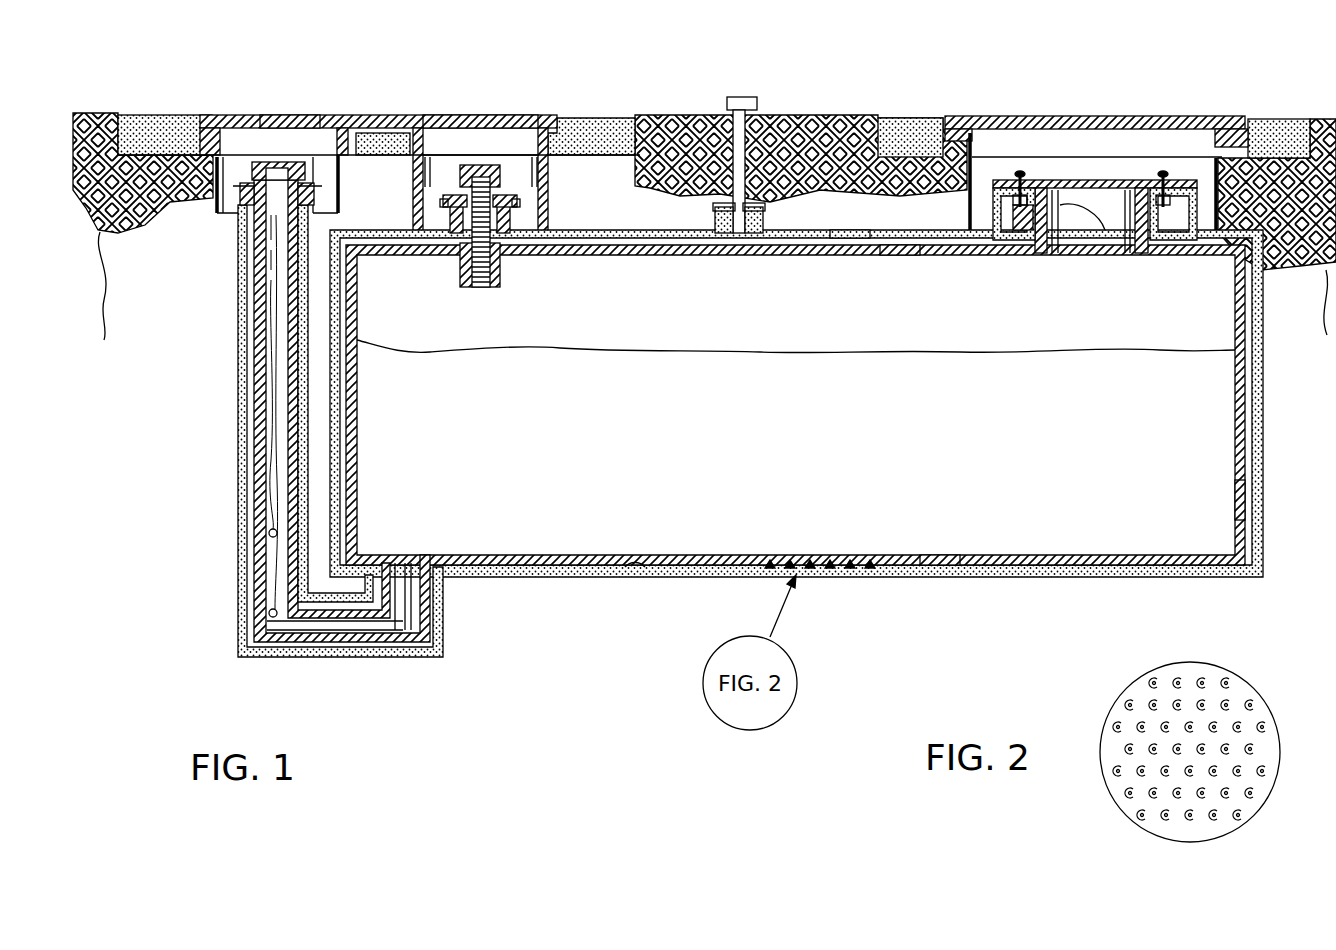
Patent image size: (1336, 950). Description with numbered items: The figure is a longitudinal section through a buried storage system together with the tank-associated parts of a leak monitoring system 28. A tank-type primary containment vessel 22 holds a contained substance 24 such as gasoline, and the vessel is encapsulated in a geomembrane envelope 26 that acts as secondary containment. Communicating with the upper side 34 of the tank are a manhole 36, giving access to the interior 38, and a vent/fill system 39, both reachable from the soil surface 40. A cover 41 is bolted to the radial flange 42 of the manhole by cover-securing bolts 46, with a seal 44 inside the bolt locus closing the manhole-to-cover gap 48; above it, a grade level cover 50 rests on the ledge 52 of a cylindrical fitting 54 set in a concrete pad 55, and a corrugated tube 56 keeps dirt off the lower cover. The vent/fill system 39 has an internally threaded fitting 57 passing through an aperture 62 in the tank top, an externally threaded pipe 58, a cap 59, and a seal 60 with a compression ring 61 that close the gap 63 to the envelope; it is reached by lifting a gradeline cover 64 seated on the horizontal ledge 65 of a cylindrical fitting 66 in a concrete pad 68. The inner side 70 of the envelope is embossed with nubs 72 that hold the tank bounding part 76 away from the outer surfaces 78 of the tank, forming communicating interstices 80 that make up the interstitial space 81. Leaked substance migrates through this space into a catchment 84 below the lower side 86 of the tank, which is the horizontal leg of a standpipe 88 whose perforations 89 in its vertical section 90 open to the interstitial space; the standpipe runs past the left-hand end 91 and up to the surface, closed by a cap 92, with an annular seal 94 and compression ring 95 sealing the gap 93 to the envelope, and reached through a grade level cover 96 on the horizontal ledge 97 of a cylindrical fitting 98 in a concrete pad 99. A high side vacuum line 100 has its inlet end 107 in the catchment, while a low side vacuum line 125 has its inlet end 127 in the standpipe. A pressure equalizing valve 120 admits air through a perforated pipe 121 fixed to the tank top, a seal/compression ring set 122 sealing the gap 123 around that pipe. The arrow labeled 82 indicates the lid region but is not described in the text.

In FIG. 1, the primary containment vessel 22 is at (855, 234).
In FIG. 1, the contained substance 24 is at (814, 340).
In FIG. 1, the envelope 26 is at (1276, 325).
In FIG. 2, the envelope 26 is at (1262, 680).
In FIG. 1, the system 28 is at (252, 563).
In FIG. 1, the upper side 34 is at (905, 242).
In FIG. 1, the manhole 36 is at (1090, 262).
In FIG. 1, the interior 38 is at (897, 338).
In FIG. 1, the vent/fill system 39 is at (566, 82).
In FIG. 1, the surface 40 is at (703, 105).
In FIG. 1, the cover 41 is at (1075, 180).
In FIG. 1, the radial flange 42 is at (1188, 228).
In FIG. 1, the seal 44 is at (1033, 180).
In FIG. 1, the cover-securing bolts 46 is at (1013, 228).
In FIG. 1, the manhole-to-cover gap 48 is at (1118, 193).
In FIG. 1, the grade level cover 50 is at (1192, 108).
In FIG. 1, the ledge 52 is at (1222, 137).
In FIG. 1, the cylindrical fitting 54 is at (950, 128).
In FIG. 1, the concrete pad 55 is at (932, 72).
In FIG. 1, the corrugated tube 56 is at (968, 195).
In FIG. 1, the internally threaded fitting 57 is at (497, 283).
In FIG. 1, the externally threaded pipe 58 is at (480, 290).
In FIG. 1, the cap 59 is at (463, 164).
In FIG. 1, the seal 60 is at (513, 193).
In FIG. 1, the compression ring 61 is at (443, 200).
In FIG. 1, the aperture 62 is at (500, 265).
In FIG. 1, the gap 63 is at (495, 227).
In FIG. 1, the gradeline cover 64 is at (488, 114).
In FIG. 1, the horizontal ledge 65 is at (410, 115).
In FIG. 1, the cylindrical fitting 66 is at (572, 118).
In FIG. 1, the concrete pad 68 is at (613, 118).
In FIG. 1, the inner side 70 is at (620, 579).
In FIG. 2, the inner side 70 is at (1128, 694).
In FIG. 1, the nubs 72 is at (852, 578).
In FIG. 2, the nubs 72 is at (1180, 814).
In FIG. 1, the tank bounding part 76 is at (944, 560).
In FIG. 1, the outer surfaces 78 is at (1252, 503).
In FIG. 1, the interstices 80 is at (806, 562).
In FIG. 1, the interstitial space 81 is at (876, 558).
In FIG. 1, the lid assembly 82 is at (470, 60).
In FIG. 1, the catchment 84 is at (400, 652).
In FIG. 1, the lower side 86 is at (1100, 578).
In FIG. 1, the standpipe 88 is at (318, 655).
In FIG. 1, the perforations 89 is at (397, 570).
In FIG. 1, the vertical section 90 is at (432, 622).
In FIG. 1, the left-hand end 91 is at (354, 503).
In FIG. 1, the cap 92 is at (262, 161).
In FIG. 1, the gap 93 is at (246, 214).
In FIG. 1, the annular seal 94 is at (240, 198).
In FIG. 1, the compression ring 95 is at (318, 182).
In FIG. 1, the grade level cover 96 is at (268, 114).
In FIG. 1, the horizontal ledge 97 is at (350, 127).
In FIG. 1, the cylindrical fitting 98 is at (208, 114).
In FIG. 1, the concrete pad 99 is at (138, 114).
In FIG. 1, the high side vacuum line 100 is at (268, 584).
In FIG. 1, the inlet end 107 is at (264, 612).
In FIG. 1, the pressure equalizing valve 120 is at (753, 102).
In FIG. 1, the perforated pipe 121 is at (748, 187).
In FIG. 1, the seal/compression ring set 122 is at (705, 197).
In FIG. 1, the gap 123 is at (748, 233).
In FIG. 1, the vacuum line 125 is at (276, 478).
In FIG. 1, the inlet end 127 is at (247, 530).